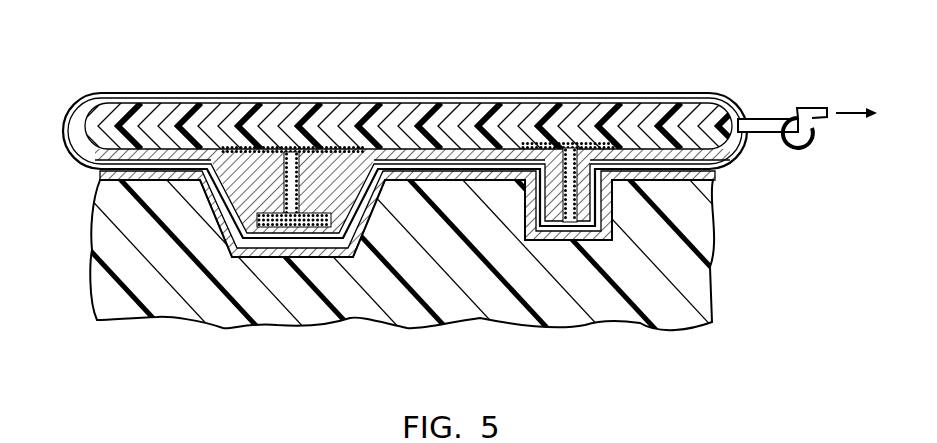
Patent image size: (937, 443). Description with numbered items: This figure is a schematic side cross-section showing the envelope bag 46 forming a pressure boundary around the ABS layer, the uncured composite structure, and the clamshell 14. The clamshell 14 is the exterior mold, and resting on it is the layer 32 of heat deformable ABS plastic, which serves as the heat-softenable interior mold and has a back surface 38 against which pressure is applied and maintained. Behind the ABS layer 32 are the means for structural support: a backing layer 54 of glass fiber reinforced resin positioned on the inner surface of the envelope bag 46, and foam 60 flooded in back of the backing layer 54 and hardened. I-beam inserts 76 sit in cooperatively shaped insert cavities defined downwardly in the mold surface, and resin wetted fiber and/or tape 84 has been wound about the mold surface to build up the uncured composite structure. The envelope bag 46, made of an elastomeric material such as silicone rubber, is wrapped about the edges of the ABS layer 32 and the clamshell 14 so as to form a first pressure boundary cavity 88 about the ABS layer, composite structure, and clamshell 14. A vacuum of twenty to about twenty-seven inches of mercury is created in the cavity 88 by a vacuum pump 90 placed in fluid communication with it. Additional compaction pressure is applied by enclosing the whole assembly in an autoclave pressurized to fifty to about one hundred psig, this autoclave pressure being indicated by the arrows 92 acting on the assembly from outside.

The clamshell 14 is at (590, 106).
The layer of heat deformable ABS plastic 32 is at (738, 150).
The back surface 38 is at (708, 180).
The envelope bag 46 is at (64, 117).
The backing layer 54 is at (100, 176).
The foam 60 is at (693, 280).
The I-beam inserts 76 is at (273, 184).
The resin wetted fiber and/or tape 84 is at (108, 133).
The first pressure boundary cavity 88 is at (737, 124).
The vacuum pump 90 is at (799, 108).
The arrows 92 is at (173, 80).